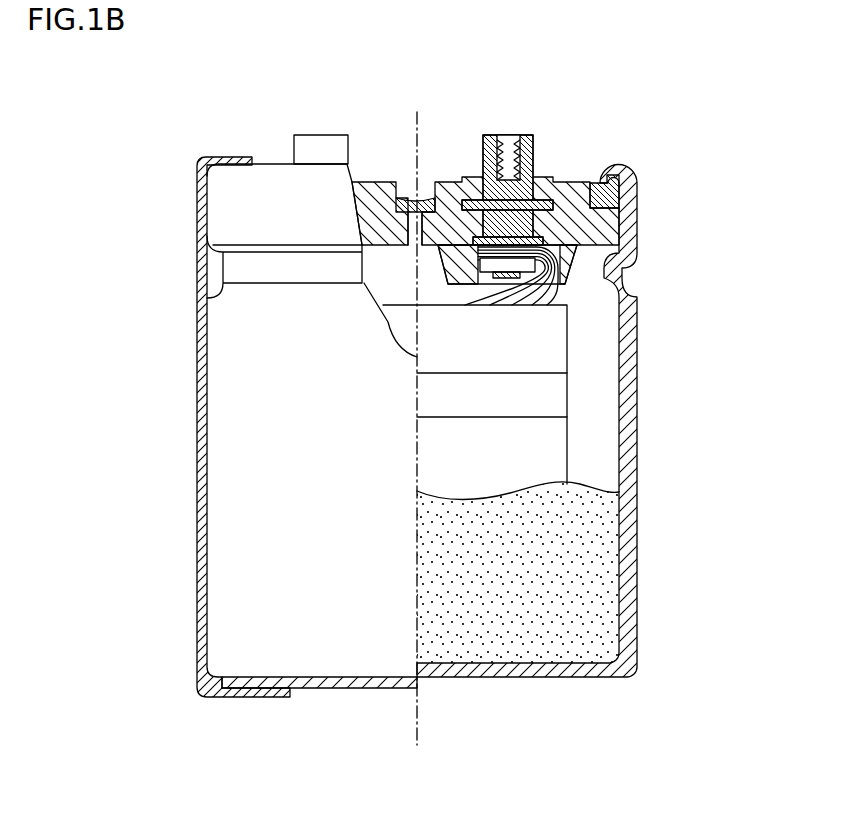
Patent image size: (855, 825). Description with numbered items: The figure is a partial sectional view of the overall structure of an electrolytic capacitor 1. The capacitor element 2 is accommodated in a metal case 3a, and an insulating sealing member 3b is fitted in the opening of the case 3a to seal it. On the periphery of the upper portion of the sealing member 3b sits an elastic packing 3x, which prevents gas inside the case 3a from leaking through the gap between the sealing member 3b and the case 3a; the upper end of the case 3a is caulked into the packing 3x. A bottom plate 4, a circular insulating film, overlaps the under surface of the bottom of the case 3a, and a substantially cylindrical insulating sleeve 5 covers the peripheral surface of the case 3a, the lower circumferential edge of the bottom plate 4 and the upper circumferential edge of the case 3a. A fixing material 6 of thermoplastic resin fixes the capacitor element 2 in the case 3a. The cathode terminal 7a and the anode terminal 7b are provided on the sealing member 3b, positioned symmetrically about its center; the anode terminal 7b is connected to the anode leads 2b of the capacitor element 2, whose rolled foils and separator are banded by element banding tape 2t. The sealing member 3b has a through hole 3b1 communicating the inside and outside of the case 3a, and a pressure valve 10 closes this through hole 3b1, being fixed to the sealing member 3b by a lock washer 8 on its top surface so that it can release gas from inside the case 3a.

The electrolytic capacitor 1 is at (661, 102).
The capacitor element 2 is at (548, 456).
The anode leads 2b is at (560, 282).
The element banding tape 2t is at (548, 395).
The case 3a is at (348, 636).
The sealing member 3b is at (595, 229).
The through hole 3b1 is at (406, 247).
The packing 3x is at (637, 190).
The bottom plate 4 is at (337, 680).
The sleeve 5 is at (197, 423).
The fixing material 6 is at (592, 556).
The cathode terminal 7a is at (322, 150).
The anode terminal 7b is at (524, 133).
The lock washer 8 is at (427, 190).
The pressure valve 10 is at (410, 197).